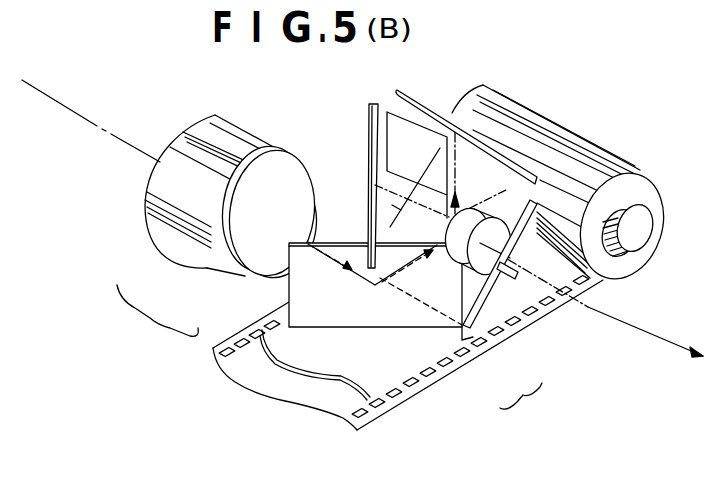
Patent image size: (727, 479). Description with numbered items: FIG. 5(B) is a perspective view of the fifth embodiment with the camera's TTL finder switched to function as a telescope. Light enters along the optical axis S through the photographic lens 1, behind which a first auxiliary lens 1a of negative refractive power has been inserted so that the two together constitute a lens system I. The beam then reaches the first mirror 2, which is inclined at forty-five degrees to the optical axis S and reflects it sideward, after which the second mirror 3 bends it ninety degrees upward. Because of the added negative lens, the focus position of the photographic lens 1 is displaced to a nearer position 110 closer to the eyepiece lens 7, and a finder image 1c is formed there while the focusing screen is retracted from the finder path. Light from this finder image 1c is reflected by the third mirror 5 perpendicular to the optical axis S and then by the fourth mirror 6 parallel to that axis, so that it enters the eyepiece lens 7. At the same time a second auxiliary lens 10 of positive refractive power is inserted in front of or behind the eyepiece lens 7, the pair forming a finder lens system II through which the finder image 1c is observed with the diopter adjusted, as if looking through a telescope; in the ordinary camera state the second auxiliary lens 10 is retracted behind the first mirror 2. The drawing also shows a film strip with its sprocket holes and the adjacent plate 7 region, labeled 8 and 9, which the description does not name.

The photographic lens 1 is at (167, 217).
The first auxiliary lens 1a is at (49, 76).
The finder image 1c is at (412, 142).
The first mirror 2 is at (308, 285).
The second mirror 3 is at (522, 208).
The third mirror 5 is at (500, 116).
The fourth mirror 6 is at (372, 163).
The eyepiece lens 7 is at (530, 298).
The film 8 is at (550, 275).
The image on film 9 is at (572, 293).
The second auxiliary lens 10 is at (497, 292).
The nearer position 110 is at (393, 132).
The optical axis S is at (95, 128).
The lens system I is at (157, 319).
The finder lens system II is at (521, 407).